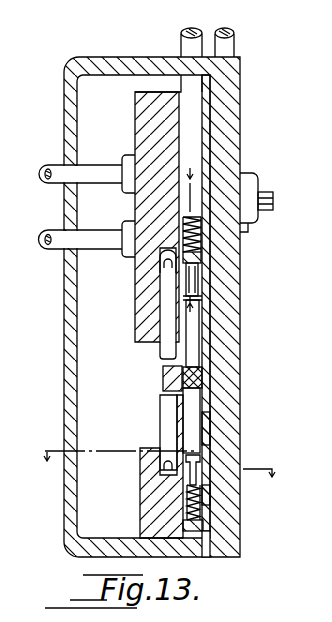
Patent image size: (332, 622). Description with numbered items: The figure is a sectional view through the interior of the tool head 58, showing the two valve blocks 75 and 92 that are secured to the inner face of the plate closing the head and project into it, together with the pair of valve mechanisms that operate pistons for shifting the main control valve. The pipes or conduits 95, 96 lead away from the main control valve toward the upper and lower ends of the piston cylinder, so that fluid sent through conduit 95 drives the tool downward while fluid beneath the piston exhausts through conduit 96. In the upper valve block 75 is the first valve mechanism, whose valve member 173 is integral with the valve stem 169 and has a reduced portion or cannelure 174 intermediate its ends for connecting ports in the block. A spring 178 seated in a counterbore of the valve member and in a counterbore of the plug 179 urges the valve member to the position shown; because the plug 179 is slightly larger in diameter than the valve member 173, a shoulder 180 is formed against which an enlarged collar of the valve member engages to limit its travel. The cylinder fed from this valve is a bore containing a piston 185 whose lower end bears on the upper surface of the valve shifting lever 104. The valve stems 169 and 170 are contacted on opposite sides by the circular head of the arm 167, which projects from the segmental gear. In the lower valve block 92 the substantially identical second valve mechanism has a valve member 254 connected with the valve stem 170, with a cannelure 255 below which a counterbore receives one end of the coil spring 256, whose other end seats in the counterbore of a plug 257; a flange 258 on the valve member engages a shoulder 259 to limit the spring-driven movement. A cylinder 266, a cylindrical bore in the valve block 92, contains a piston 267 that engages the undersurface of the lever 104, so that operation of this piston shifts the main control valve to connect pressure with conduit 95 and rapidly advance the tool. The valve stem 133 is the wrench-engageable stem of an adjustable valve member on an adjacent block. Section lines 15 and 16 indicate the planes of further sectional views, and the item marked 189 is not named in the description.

The tool head 58 is at (68, 106).
The valve block 75 is at (145, 125).
The pipe or conduit 95 is at (59, 184).
The pipe or conduit 96 is at (59, 253).
The valve stem 133 is at (262, 195).
The plug 179 is at (193, 140).
The spring 178 is at (200, 237).
The shoulder 180 is at (200, 256).
The reduced portion or cannelure 174 is at (194, 284).
The valve member 173 is at (197, 302).
The valve stem 169 is at (196, 352).
The arm 167 is at (203, 378).
The valve stem 170 is at (197, 404).
The valve member 254 is at (204, 433).
The reduced portion or cannelure 255 is at (197, 479).
The shoulder 259 is at (207, 496).
The flange 258 is at (200, 509).
The coil spring 256 is at (204, 519).
The plug 257 is at (208, 532).
The cylinder 266 is at (163, 485).
The valve block 92 is at (140, 517).
The piston 267 is at (167, 407).
The lever 104 is at (165, 380).
The piston 185 is at (163, 352).
The piston 189 is at (163, 262).
The section line 15- 15 is at (190, 240).
The section line 16- 16 is at (161, 458).